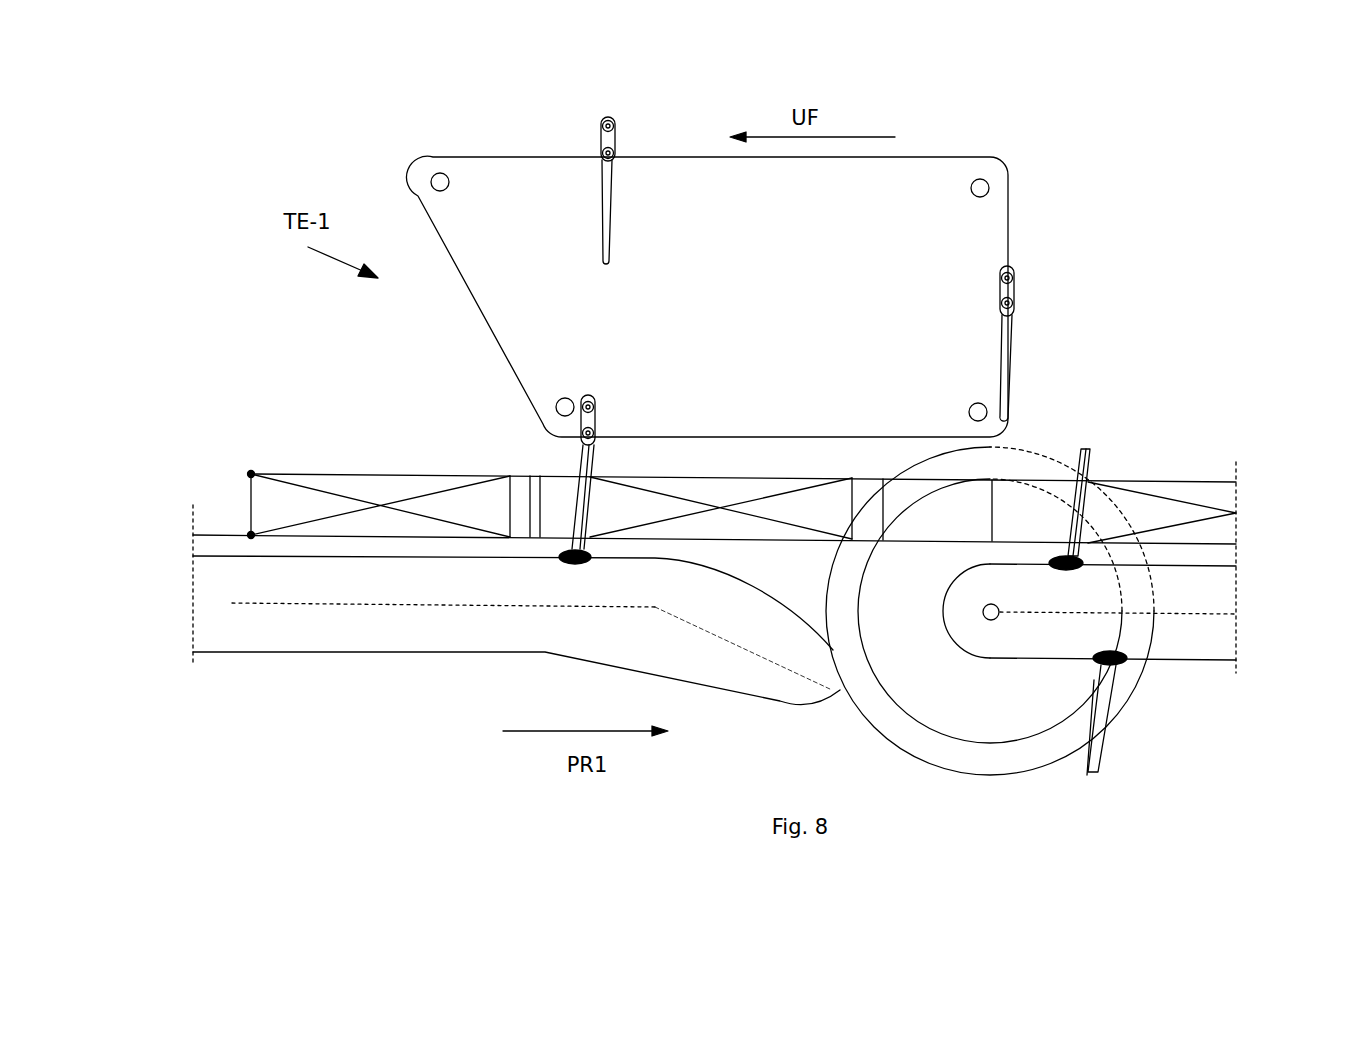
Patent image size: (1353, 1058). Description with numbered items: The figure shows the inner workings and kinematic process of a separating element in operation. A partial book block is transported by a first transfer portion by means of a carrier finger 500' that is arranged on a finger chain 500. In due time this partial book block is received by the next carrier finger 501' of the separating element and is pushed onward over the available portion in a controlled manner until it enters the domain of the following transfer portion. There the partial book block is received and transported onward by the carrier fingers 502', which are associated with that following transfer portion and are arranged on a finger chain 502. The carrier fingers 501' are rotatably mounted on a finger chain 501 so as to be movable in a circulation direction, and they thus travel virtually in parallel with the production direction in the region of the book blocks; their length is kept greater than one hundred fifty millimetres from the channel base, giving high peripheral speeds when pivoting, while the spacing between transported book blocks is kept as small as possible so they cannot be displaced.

The finger chain 500 is at (466, 613).
The carrier finger 500' is at (658, 472).
The finger chain 501 is at (782, 292).
The carrier finger 501' is at (814, 288).
The finger chain 502 is at (1068, 611).
The carrier finger 502' is at (1138, 595).